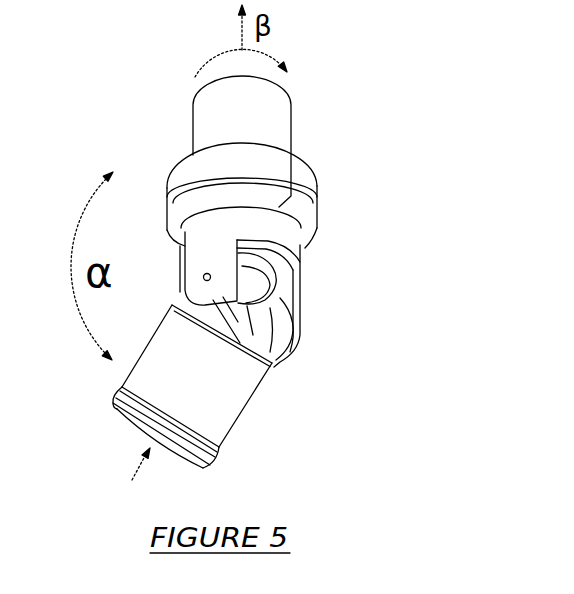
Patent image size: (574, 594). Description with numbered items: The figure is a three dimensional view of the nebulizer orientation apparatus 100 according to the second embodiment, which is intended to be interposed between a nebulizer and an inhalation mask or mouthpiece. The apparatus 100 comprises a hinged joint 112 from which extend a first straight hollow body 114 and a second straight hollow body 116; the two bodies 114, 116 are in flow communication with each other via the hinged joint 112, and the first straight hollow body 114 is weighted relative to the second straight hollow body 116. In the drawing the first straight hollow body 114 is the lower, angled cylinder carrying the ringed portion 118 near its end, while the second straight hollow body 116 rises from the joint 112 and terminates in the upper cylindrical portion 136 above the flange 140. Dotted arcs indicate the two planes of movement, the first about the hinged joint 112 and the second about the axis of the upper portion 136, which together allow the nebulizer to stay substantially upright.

The nebulizer orientation apparatus 100 is at (335, 187).
The hinged joint 112 is at (176, 257).
The first straight hollow body 114 is at (247, 423).
The second straight hollow body 116 is at (293, 245).
The grooves 118 is at (122, 388).
The upper cylindrical body 136 is at (293, 124).
The flange 140 is at (192, 167).